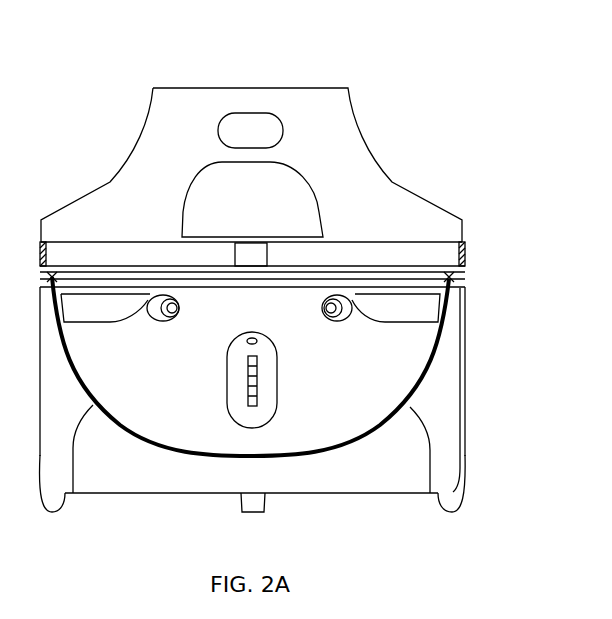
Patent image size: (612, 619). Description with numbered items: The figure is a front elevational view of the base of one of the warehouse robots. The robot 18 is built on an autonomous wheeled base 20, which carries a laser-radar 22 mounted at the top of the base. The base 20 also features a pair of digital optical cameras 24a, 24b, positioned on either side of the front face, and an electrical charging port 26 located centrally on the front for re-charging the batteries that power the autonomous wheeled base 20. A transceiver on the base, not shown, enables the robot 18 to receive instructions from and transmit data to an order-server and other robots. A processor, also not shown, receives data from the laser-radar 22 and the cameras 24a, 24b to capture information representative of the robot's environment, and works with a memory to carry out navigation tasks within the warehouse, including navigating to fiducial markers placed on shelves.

The robot 18 is at (461, 84).
The autonomous wheeled base 20 is at (166, 388).
The laser-radar 22 is at (250, 253).
The digital optical camera 24a is at (148, 325).
The digital optical camera 24b is at (352, 316).
The electrical charging port 26 is at (268, 395).